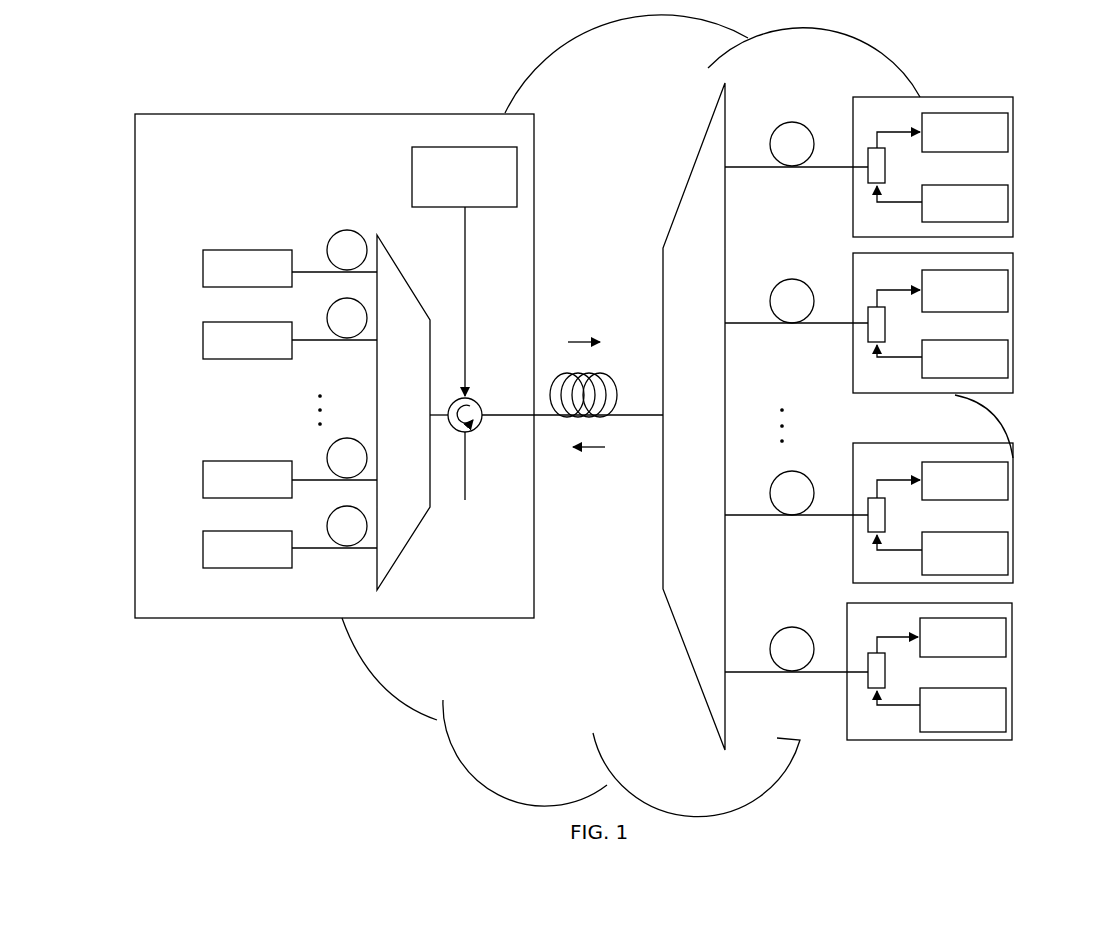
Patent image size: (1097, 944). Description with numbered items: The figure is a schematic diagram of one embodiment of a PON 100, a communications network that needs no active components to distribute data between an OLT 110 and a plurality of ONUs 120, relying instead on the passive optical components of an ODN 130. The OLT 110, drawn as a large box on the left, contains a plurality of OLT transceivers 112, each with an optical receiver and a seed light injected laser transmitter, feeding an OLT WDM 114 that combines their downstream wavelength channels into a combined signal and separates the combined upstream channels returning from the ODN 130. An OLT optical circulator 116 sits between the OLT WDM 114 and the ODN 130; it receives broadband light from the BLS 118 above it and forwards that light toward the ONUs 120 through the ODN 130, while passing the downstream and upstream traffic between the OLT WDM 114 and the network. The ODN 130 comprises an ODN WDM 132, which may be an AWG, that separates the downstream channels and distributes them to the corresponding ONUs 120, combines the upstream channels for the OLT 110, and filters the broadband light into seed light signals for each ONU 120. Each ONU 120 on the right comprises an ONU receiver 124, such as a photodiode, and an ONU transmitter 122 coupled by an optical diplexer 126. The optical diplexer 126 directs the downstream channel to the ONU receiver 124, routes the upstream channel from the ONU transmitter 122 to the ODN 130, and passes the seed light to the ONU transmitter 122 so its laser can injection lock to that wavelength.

The PON 100 is at (138, 673).
The OLT 110 is at (293, 110).
The OLT transceiver 112 is at (203, 272).
The OLT WDM 114 is at (405, 280).
The OLT optical circulator 116 is at (456, 382).
The BLS 118 is at (412, 173).
The ONU 120 is at (1013, 113).
The ONU transmitter 122 is at (1013, 202).
The ONU receiver 124 is at (1013, 132).
The optical diplexer 126 is at (867, 148).
The ODN 130 is at (518, 82).
The ODN WDM 132 is at (680, 633).